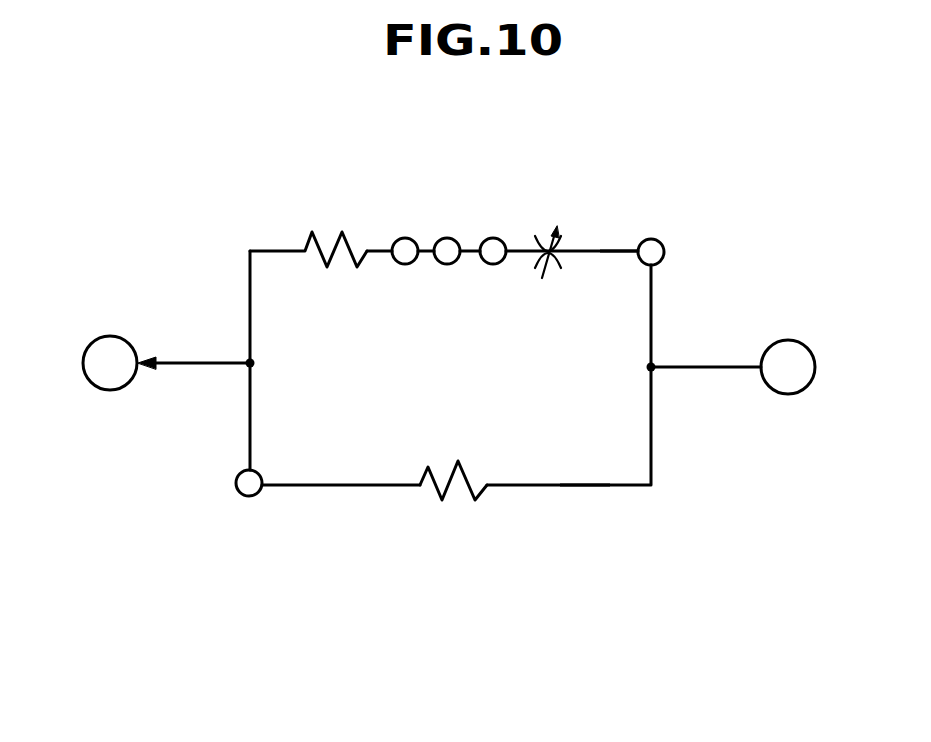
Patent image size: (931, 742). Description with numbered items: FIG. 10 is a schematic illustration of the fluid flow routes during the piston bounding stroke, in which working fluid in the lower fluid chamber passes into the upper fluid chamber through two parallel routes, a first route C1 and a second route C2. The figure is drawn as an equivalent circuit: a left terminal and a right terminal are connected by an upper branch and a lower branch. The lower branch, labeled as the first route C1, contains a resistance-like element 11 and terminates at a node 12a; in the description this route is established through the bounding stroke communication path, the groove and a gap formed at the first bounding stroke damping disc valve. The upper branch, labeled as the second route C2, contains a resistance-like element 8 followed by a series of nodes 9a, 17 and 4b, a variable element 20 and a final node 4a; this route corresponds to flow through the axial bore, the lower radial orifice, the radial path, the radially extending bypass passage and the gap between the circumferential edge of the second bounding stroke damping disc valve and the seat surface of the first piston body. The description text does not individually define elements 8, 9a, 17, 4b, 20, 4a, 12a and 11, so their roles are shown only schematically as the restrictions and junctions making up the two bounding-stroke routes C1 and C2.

The resistor 8 is at (348, 231).
The contact 9a is at (408, 238).
The contact 17 is at (448, 264).
The contact 4b is at (493, 238).
The variable element / arc gap 20 is at (549, 230).
The second route C2 is at (618, 249).
The contact 4a is at (665, 247).
The contact 12a is at (253, 497).
The resistor 11 is at (441, 500).
The first route C1 is at (583, 487).